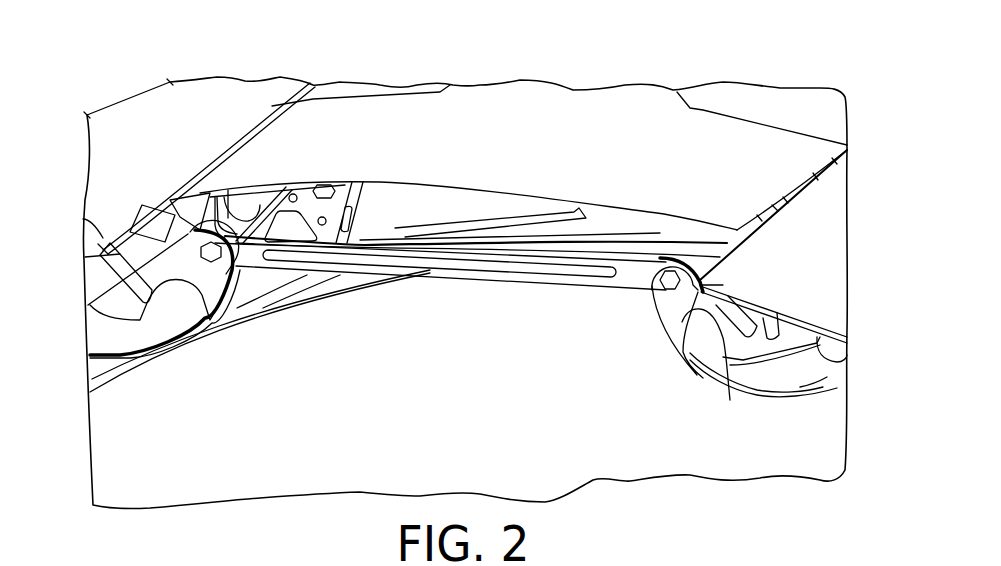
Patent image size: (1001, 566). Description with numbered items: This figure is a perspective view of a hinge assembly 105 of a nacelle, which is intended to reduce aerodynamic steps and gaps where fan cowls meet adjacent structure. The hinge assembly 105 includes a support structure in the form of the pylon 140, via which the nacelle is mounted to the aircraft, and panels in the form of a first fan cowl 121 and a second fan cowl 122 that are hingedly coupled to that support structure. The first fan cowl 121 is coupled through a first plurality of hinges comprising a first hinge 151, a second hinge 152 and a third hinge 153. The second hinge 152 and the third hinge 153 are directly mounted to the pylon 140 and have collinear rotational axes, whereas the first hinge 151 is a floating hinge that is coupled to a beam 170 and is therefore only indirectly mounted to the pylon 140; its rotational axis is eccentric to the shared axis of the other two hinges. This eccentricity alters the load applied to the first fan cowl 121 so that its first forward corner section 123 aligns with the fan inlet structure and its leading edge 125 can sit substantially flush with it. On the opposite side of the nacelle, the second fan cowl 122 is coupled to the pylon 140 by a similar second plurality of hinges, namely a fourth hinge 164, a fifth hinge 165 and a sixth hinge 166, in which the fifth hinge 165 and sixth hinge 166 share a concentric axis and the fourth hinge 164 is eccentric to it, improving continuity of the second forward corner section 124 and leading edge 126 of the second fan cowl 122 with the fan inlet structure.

The hinge assembly 105 is at (192, 439).
The first fan cowl 121 is at (143, 106).
The second fan cowl 122 is at (836, 248).
The first forward corner section 123 is at (83, 219).
The second forward corner section 124 is at (695, 358).
The leading edge 125 is at (107, 247).
The leading edge 126 is at (732, 395).
The pylon 140 is at (538, 112).
The first hinge 151 is at (234, 272).
The second hinge 152 is at (326, 181).
The third hinge 153 is at (406, 192).
The fourth hinge 164 is at (652, 300).
The fifth hinge 165 is at (786, 188).
The sixth hinge 166 is at (856, 150).
The beam 170 is at (473, 268).